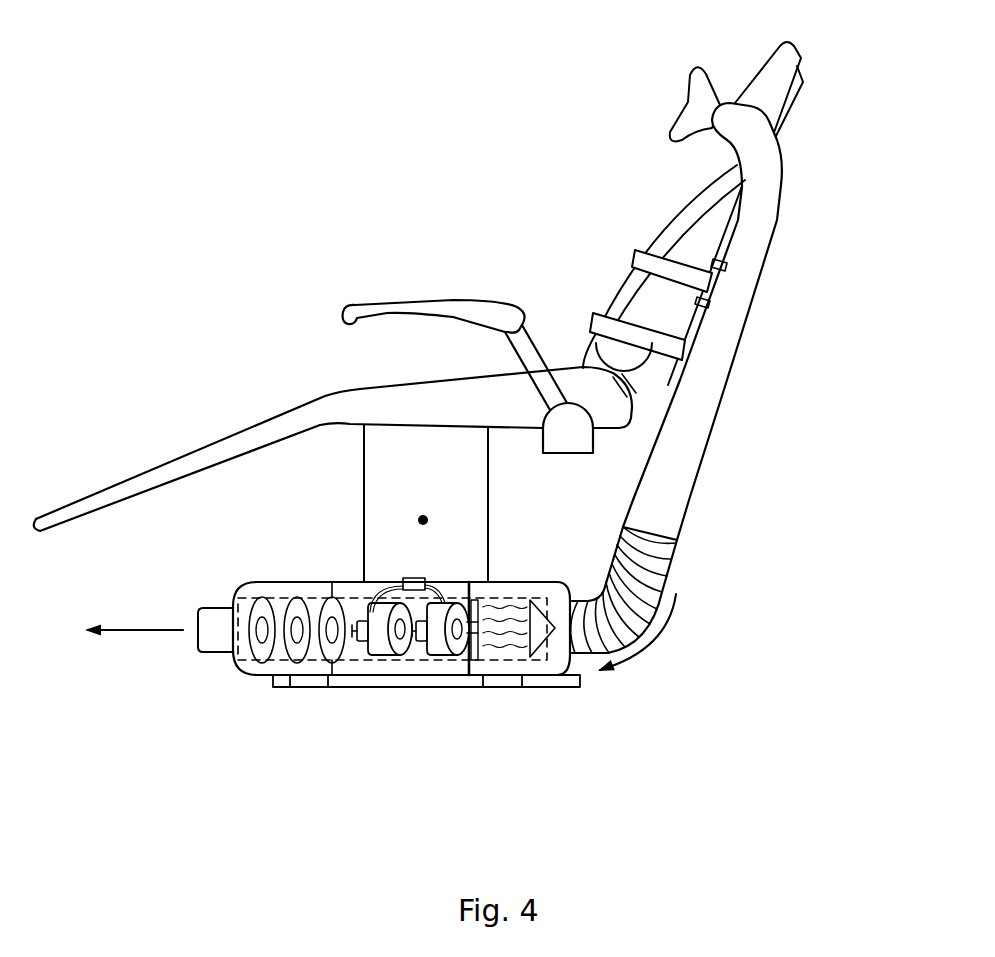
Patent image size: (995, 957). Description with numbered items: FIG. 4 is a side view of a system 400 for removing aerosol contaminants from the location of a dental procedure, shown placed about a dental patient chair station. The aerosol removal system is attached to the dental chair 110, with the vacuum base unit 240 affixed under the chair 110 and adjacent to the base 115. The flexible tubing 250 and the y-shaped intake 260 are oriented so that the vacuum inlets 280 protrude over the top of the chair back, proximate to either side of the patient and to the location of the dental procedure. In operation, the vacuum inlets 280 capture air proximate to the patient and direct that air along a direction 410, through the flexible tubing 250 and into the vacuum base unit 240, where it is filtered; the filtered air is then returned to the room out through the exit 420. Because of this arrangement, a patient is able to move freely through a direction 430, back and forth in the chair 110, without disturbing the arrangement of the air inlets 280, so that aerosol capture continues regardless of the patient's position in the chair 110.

The seat assembly with backrest and air handling system 400 is at (190, 98).
The dental chair 110 is at (138, 453).
The base 115 is at (421, 521).
The vacuum base unit 240 is at (514, 573).
The flexible tubing 250 is at (679, 560).
The y-shaped intake 260 is at (740, 372).
The vacuum inlets 280 is at (680, 106).
The direction 410 is at (648, 632).
The exit 420 is at (134, 617).
The direction 430 is at (586, 249).